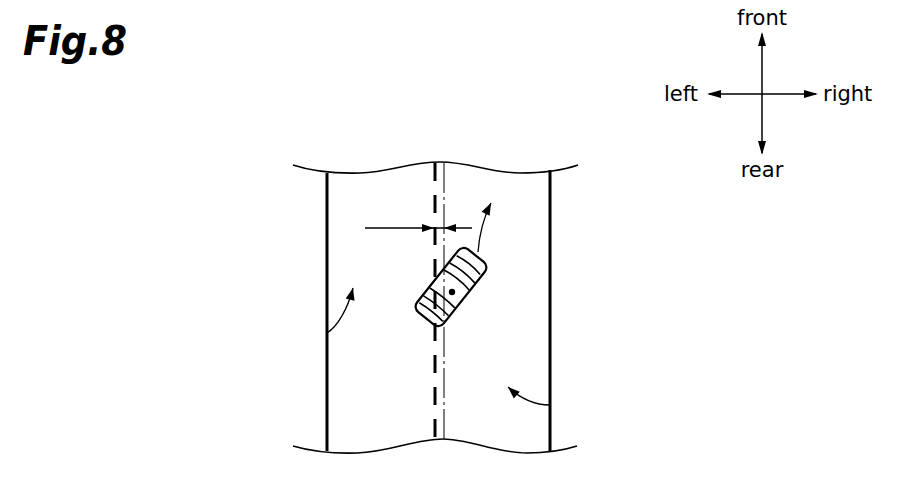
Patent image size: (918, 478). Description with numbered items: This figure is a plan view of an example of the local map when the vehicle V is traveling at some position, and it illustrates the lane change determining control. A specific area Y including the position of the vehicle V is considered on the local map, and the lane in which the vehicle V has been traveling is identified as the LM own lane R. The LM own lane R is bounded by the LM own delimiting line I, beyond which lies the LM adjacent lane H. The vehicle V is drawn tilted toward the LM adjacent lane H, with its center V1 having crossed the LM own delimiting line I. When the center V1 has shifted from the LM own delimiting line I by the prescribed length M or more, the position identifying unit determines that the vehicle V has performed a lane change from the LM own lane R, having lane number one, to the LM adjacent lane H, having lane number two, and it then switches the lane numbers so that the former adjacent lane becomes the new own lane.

The specific area Y is at (308, 217).
The LM own delimiting line I is at (433, 198).
The prescribed length M is at (418, 301).
The LM own lane R is at (327, 333).
The LM adjacent lane H is at (550, 405).
The vehicle V is at (483, 262).
The center of the vehicle V1 is at (455, 293).